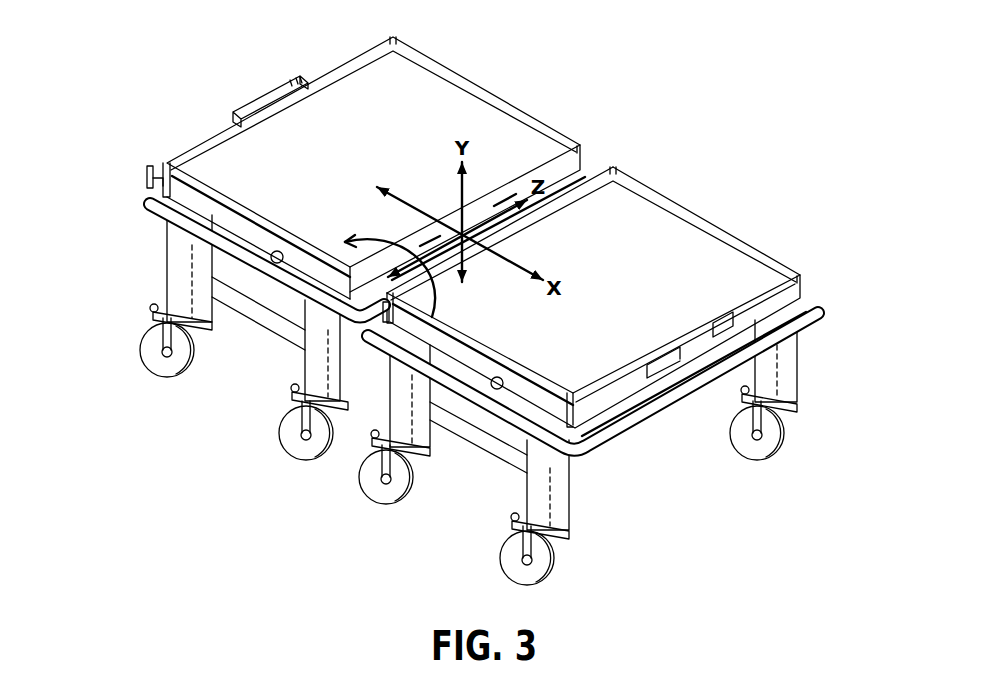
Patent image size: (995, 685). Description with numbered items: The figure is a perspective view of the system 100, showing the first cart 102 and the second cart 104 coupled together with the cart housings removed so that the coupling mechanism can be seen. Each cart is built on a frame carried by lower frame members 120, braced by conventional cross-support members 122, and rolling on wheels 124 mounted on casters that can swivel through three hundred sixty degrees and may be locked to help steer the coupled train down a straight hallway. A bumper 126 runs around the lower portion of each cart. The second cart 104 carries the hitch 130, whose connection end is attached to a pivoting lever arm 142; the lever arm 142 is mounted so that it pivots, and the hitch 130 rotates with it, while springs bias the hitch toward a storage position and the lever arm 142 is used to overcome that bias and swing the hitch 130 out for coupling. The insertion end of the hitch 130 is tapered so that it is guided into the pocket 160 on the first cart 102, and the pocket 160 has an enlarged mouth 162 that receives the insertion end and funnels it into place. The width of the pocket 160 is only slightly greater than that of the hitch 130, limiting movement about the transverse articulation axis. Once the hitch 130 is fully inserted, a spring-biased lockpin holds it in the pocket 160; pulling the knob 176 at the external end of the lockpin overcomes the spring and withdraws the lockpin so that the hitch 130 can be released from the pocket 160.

The system 100 is at (275, 538).
The first cart 102 is at (487, 63).
The second cart 104 is at (773, 227).
The lower frame members 120 is at (165, 266).
The cross-support members 122 is at (490, 440).
The wheels 124 is at (560, 583).
The bumper 126 is at (822, 324).
The hitch 130 is at (261, 97).
The pivoting lever arm 142 is at (147, 173).
The pocket 160 is at (507, 220).
The enlarged mouth 162 is at (505, 202).
The knob 176 is at (270, 252).